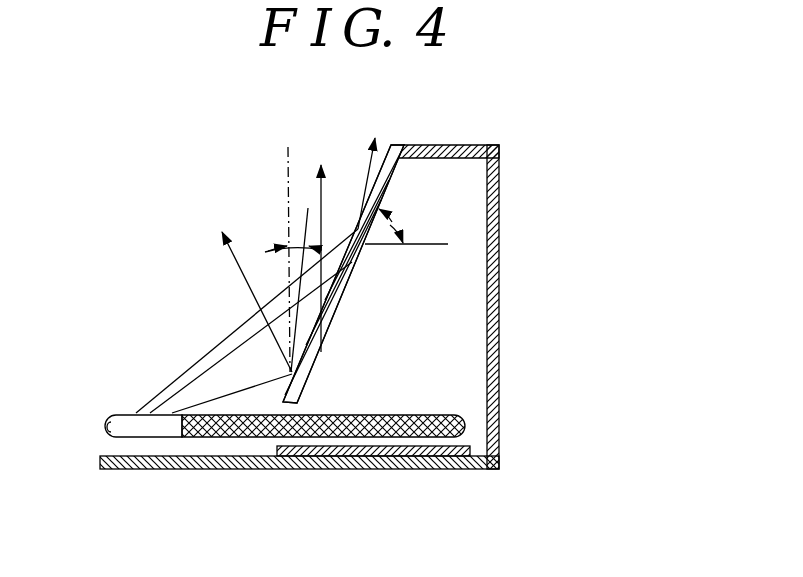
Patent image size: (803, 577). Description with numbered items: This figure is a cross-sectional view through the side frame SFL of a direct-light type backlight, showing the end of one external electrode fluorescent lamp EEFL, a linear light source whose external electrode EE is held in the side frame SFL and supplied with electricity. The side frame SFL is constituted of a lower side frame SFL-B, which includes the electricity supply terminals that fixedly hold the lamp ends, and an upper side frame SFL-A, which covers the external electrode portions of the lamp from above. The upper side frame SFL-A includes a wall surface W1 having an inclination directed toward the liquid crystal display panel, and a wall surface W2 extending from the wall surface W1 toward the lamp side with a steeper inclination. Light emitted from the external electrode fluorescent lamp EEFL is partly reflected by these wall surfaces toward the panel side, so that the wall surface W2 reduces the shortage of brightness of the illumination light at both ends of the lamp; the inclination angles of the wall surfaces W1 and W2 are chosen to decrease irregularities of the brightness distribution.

The external electrode fluorescent lamp EEFL is at (266, 416).
The external electrode EE is at (217, 437).
The wall surface W1 is at (385, 181).
The wall surface W2 is at (278, 388).
The side frame SFL is at (546, 287).
The upper side frame SFL-A is at (471, 144).
The lower side frame SFL-B is at (503, 236).